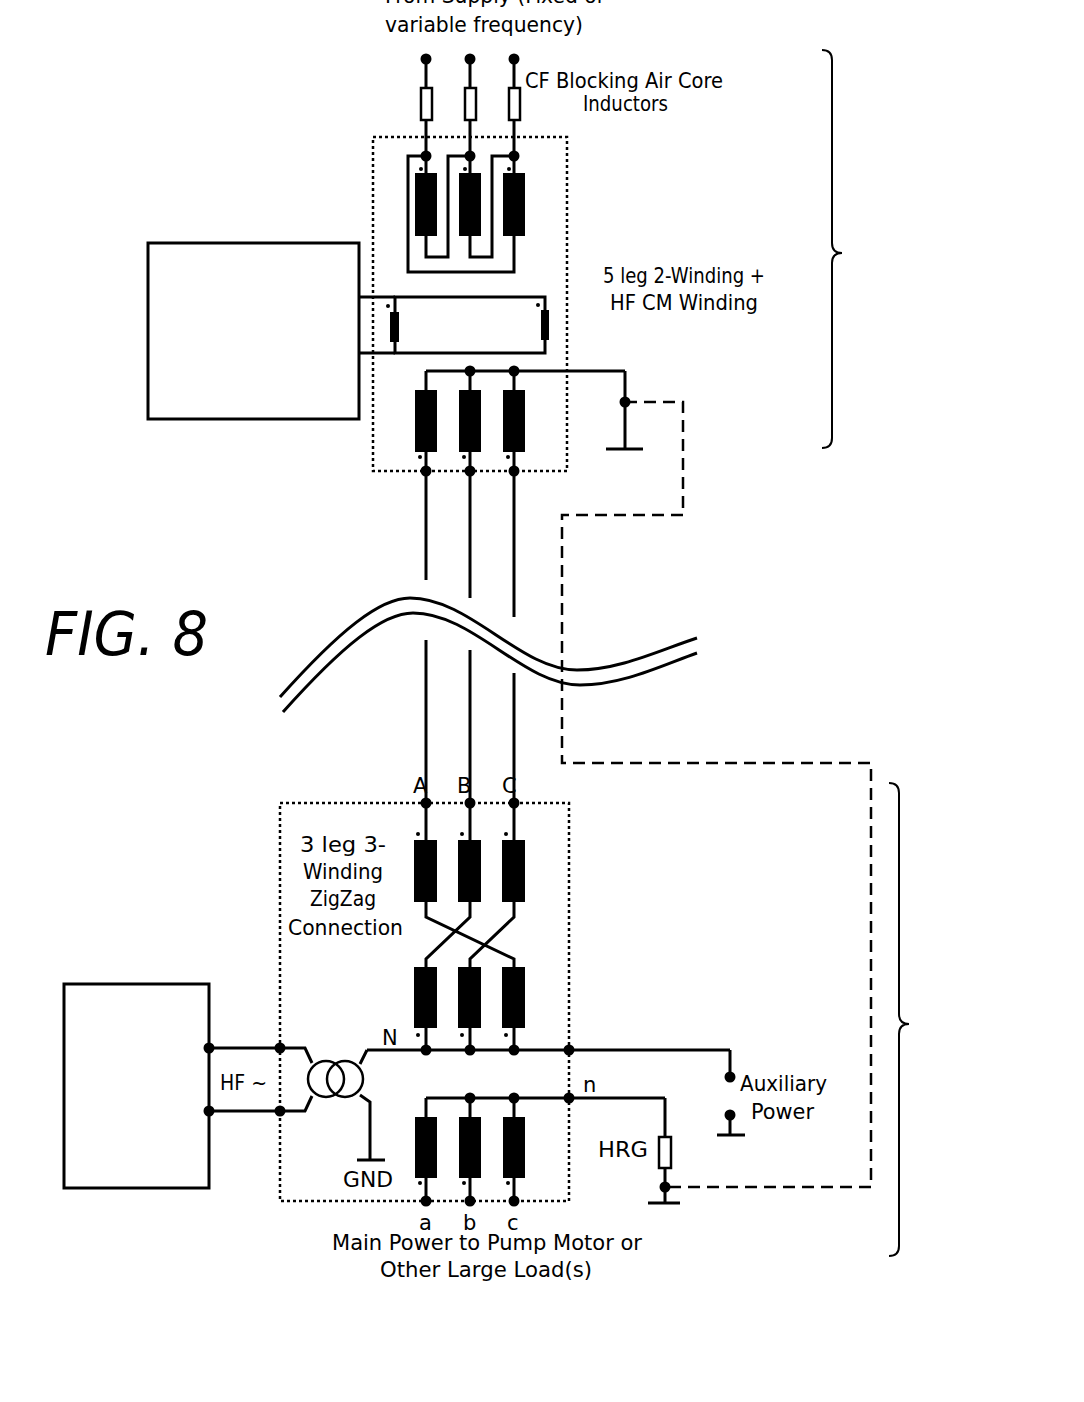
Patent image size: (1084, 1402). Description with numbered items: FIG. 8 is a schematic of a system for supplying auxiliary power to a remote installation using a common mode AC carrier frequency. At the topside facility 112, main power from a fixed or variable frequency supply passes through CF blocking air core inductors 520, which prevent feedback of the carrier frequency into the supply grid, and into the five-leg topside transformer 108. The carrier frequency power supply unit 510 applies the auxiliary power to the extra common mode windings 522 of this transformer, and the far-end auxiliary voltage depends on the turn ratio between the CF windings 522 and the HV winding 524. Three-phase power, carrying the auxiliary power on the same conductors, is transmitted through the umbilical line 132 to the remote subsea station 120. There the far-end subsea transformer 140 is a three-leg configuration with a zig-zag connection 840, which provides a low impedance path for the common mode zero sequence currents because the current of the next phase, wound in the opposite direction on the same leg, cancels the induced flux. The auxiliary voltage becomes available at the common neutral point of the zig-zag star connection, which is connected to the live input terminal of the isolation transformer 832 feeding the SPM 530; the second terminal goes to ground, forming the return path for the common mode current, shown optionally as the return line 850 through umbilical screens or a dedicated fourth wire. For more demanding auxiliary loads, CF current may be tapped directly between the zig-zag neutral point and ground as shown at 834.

The CF blocking air core inductors 520 is at (398, 98).
The topside transformer 108 is at (373, 195).
The common mode windings 522 is at (565, 314).
The HV winding 524 is at (399, 432).
The topside facility 112 is at (852, 249).
The carrier frequency power supply unit 510 is at (248, 409).
The umbilical line 132 is at (396, 567).
The return line 850 is at (627, 515).
The subsea transformer 140 is at (280, 960).
The zig-zag connection 840 is at (539, 976).
The isolation transformer 832 is at (333, 1030).
The auxiliary power tap 834 is at (748, 1064).
The SPM 530 is at (126, 1177).
The remote subsea station 120 is at (920, 1019).